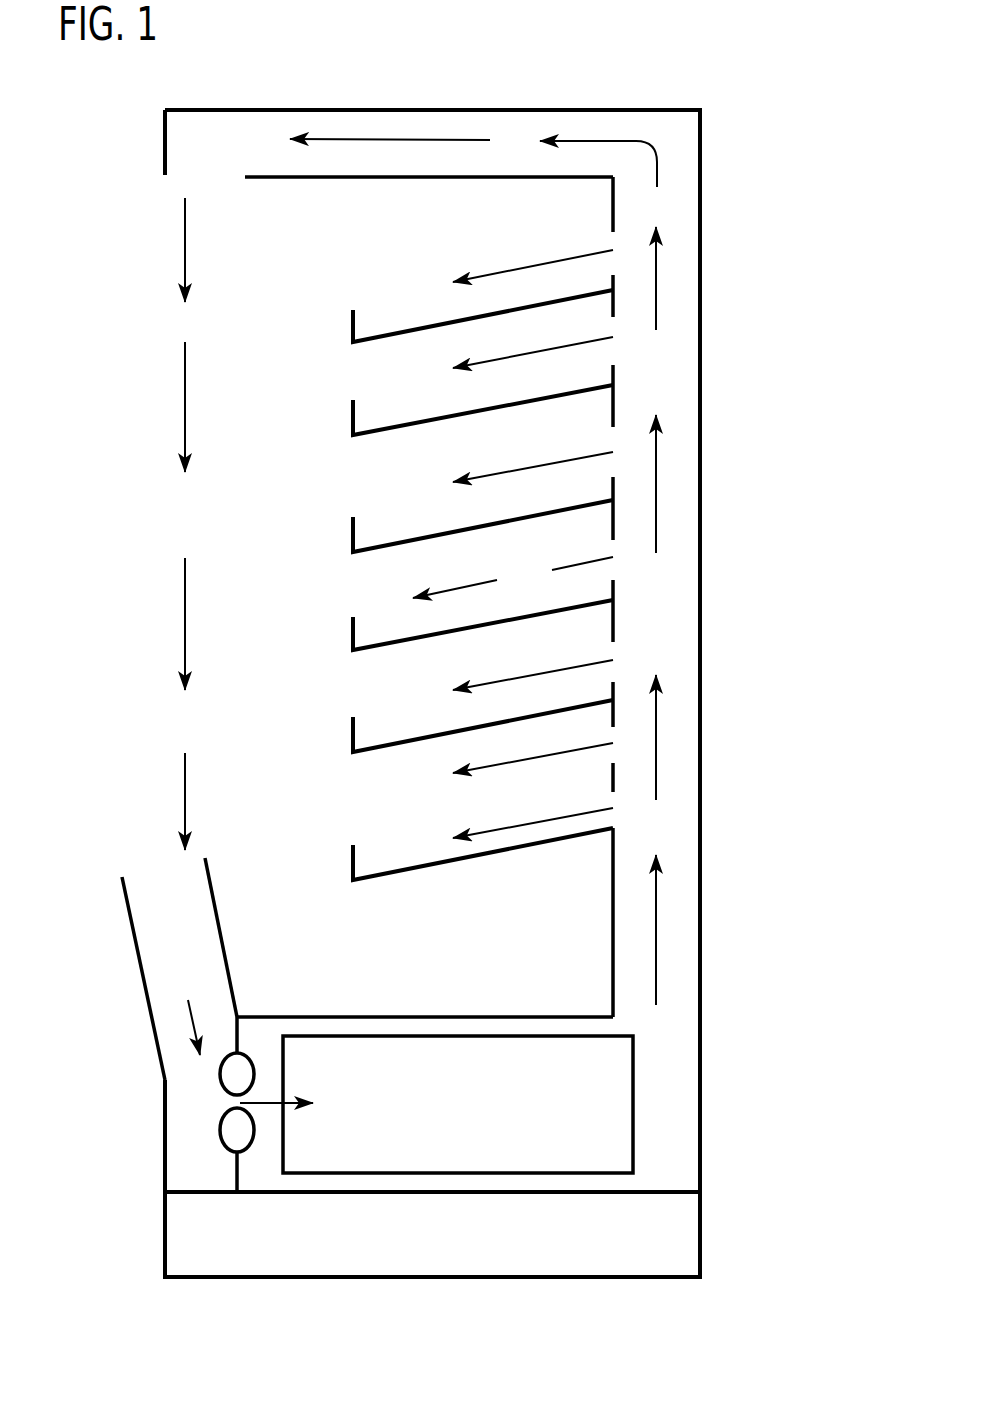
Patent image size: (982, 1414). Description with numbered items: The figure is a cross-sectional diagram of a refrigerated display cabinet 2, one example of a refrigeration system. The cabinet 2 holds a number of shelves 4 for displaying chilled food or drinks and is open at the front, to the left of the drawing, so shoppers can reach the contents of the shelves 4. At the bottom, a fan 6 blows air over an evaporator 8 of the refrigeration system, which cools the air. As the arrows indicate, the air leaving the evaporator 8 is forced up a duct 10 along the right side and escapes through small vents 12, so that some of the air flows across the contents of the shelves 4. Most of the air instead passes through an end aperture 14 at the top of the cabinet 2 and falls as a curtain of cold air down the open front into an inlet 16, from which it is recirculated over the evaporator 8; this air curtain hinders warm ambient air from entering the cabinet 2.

The refrigerated display cabinet 2 is at (665, 90).
The shelves 4 is at (352, 323).
The fan 6 is at (208, 1107).
The evaporator 8 is at (617, 1102).
The duct 10 is at (672, 617).
The vents 12 is at (612, 243).
The end aperture 14 is at (183, 177).
The inlet 16 is at (150, 870).